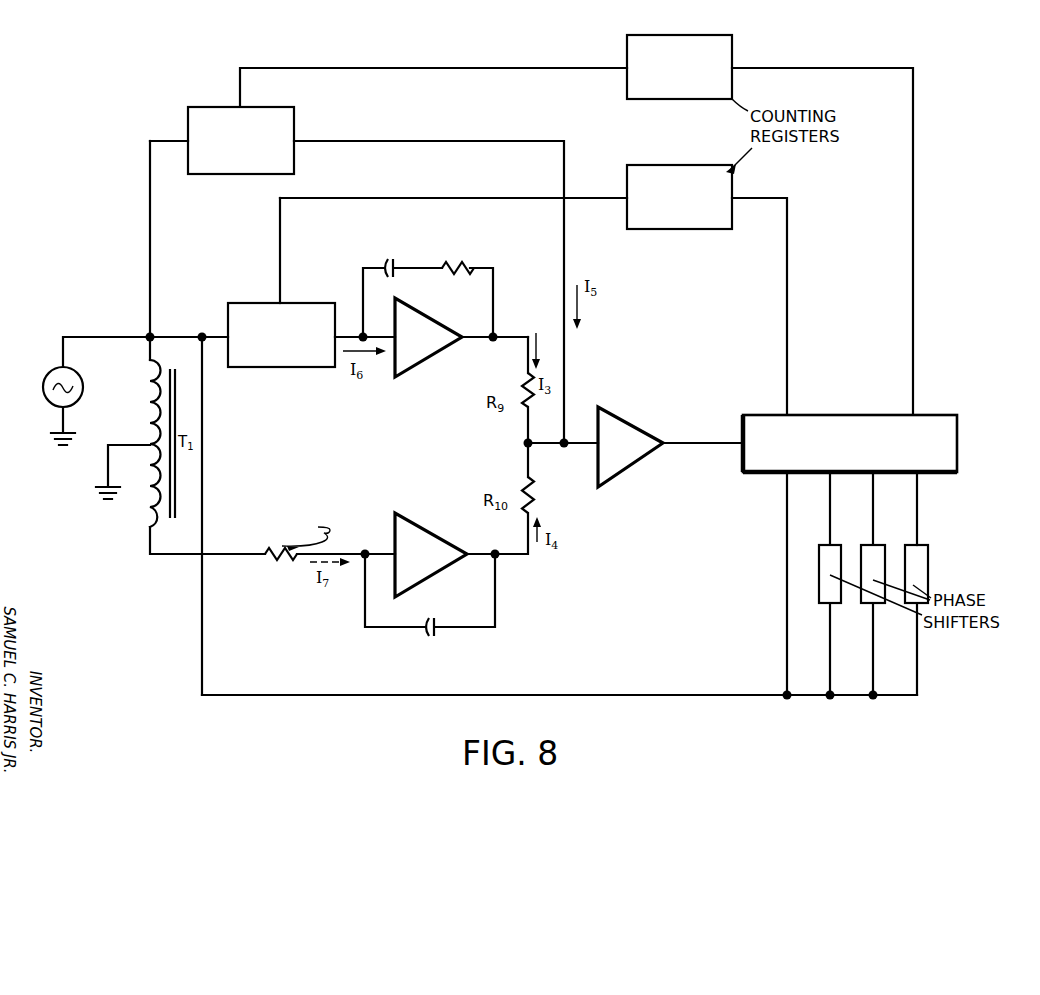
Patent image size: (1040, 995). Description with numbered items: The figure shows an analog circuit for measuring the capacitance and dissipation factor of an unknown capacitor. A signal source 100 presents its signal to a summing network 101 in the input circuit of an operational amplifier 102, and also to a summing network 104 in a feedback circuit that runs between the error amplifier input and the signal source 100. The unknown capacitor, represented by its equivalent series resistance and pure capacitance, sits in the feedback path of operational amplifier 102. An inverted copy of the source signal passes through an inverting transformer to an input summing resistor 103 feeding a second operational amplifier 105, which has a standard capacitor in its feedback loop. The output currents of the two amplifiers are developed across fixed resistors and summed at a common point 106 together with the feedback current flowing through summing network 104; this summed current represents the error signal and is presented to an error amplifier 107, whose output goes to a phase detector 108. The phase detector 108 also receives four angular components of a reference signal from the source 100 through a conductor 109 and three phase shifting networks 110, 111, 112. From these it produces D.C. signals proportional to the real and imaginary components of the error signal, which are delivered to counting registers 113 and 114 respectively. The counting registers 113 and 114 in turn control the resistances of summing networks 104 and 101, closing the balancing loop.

The signal source 100 is at (43, 385).
The summing network 101 is at (250, 303).
The operational amplifier 102 is at (447, 355).
The input summing resistor 103 is at (265, 556).
The summing network 104 is at (201, 107).
The operational amplifier 105 is at (425, 523).
The junction node 106 is at (525, 444).
The error amplifier 107 is at (656, 438).
The phase detector 108 is at (942, 412).
The conductor 109 is at (664, 692).
The phase shifting network 110 is at (826, 543).
The phase shifting network 111 is at (882, 545).
The phase shifting network 112 is at (924, 545).
The counting register 113 is at (732, 45).
The counting register 114 is at (708, 165).